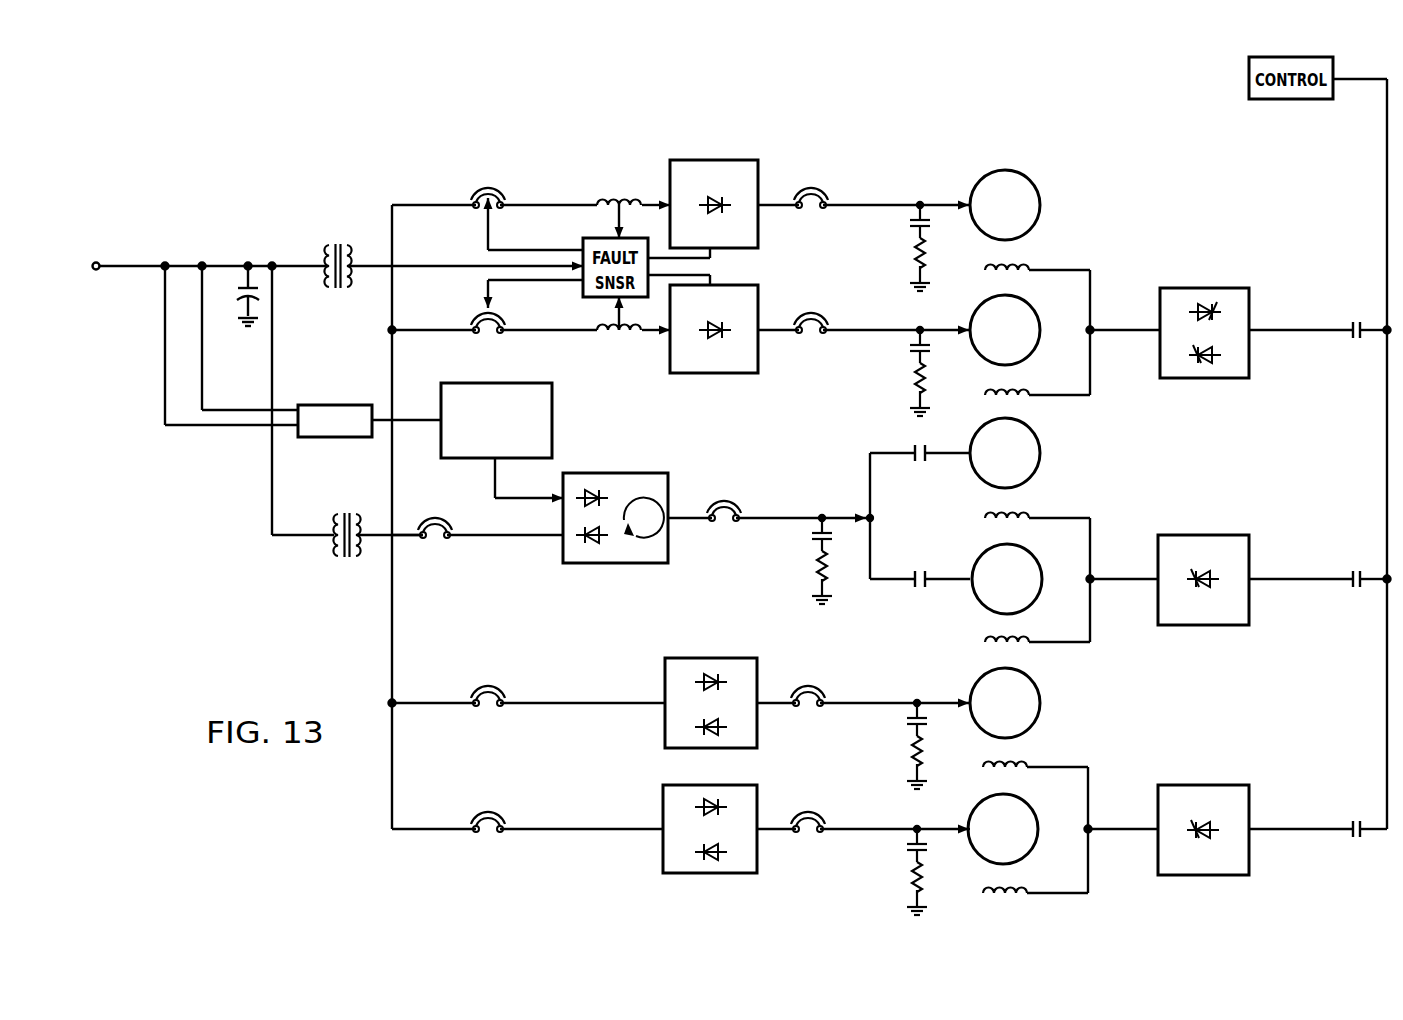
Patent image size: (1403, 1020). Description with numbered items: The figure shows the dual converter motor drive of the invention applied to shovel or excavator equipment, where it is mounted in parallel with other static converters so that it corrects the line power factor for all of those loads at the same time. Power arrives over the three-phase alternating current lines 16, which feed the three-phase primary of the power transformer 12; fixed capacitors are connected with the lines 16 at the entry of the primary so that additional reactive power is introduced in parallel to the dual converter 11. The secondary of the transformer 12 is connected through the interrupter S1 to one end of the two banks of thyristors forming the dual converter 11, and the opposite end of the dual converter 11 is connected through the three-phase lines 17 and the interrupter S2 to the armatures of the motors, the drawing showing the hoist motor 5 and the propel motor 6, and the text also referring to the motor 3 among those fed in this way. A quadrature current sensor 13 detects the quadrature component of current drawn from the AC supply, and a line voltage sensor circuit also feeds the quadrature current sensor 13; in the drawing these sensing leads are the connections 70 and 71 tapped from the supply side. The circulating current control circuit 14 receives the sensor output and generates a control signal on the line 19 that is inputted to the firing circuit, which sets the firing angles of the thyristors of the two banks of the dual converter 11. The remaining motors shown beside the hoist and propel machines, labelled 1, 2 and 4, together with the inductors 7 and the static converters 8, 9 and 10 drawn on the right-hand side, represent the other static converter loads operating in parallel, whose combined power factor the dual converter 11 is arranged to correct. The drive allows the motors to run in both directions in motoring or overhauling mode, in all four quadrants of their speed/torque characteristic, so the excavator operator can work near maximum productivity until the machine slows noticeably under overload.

The swing motor 1 is at (1040, 194).
The swing motor 2 is at (1035, 352).
The motor 3 is at (1040, 694).
The crowd motor 4 is at (1033, 814).
The DC motor 5 is at (1040, 452).
The DC motor 6 is at (1037, 566).
The field winding inductor 7 is at (988, 268).
The thyristor converter 8 is at (1249, 357).
The thyristor converter 9 is at (1249, 552).
The thyristor converter 10 is at (1249, 797).
The dual converter 11 is at (615, 563).
The power transformer 12 is at (341, 559).
The quadrature current sensor 13 is at (337, 404).
The circulating current control circuit 14 is at (552, 400).
The lines 16 is at (93, 262).
The three-phase lines 17 is at (834, 514).
The line 19 is at (398, 420).
The voltage sensing lead 70 is at (164, 352).
The current sensing lead 71 is at (203, 342).
The interrupter S1 is at (438, 540).
The interrupter S2 is at (726, 522).